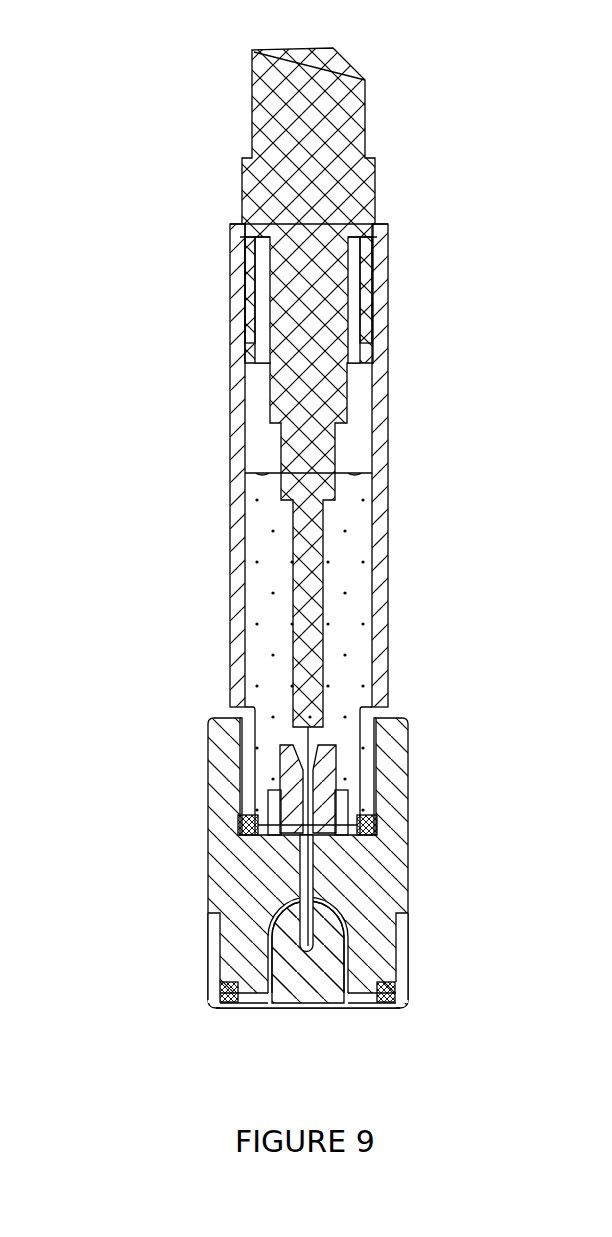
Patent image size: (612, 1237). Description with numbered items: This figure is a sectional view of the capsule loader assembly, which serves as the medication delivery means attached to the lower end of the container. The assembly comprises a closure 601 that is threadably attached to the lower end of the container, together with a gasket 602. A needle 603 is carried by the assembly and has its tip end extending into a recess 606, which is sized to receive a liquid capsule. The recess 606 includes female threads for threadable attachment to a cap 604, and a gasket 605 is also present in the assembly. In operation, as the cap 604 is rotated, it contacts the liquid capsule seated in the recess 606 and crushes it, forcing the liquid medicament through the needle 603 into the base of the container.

The closure 601 is at (207, 775).
The gasket 602 is at (238, 818).
The needle 603 is at (300, 878).
The cap 604 is at (247, 1011).
The gasket 605 is at (220, 983).
The recess 606 is at (340, 908).